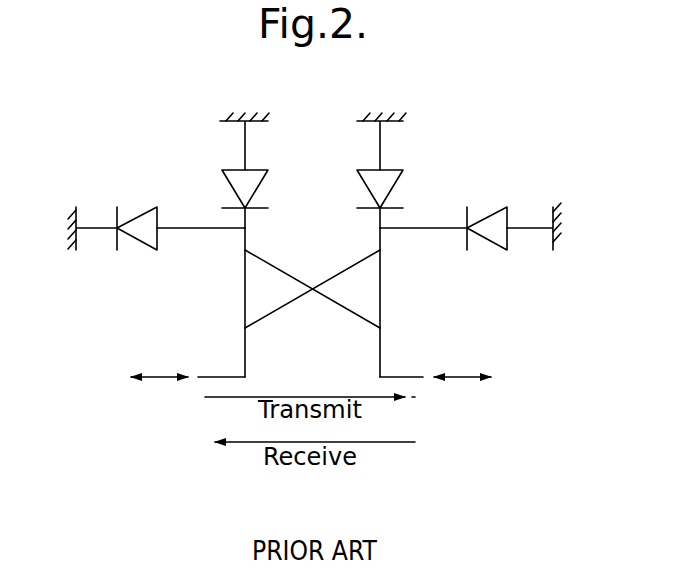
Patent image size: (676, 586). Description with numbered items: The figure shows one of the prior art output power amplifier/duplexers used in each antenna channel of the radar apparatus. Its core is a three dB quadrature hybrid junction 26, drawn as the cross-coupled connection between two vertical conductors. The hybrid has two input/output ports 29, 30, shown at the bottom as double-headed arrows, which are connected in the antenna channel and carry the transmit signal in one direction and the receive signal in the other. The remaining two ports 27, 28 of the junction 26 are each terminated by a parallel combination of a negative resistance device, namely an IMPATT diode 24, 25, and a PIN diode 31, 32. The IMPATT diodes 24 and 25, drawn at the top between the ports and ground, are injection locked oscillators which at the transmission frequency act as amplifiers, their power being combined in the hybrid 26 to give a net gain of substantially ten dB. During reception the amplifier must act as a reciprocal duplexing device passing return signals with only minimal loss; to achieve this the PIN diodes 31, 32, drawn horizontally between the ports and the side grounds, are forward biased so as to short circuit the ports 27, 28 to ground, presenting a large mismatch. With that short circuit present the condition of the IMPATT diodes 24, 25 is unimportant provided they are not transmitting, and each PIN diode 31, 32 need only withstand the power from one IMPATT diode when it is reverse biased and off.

The IMPATT diode 24 is at (242, 180).
The IMPATT diode 25 is at (383, 181).
The 3 dB quadrature hybrid junction 26 is at (326, 268).
The port of the hybrid junction 27 is at (382, 238).
The port of the hybrid junction 28 is at (245, 240).
The input/output port 29 is at (221, 375).
The input/output port 30 is at (401, 375).
The PIN diode 31 is at (147, 232).
The PIN diode 32 is at (492, 230).